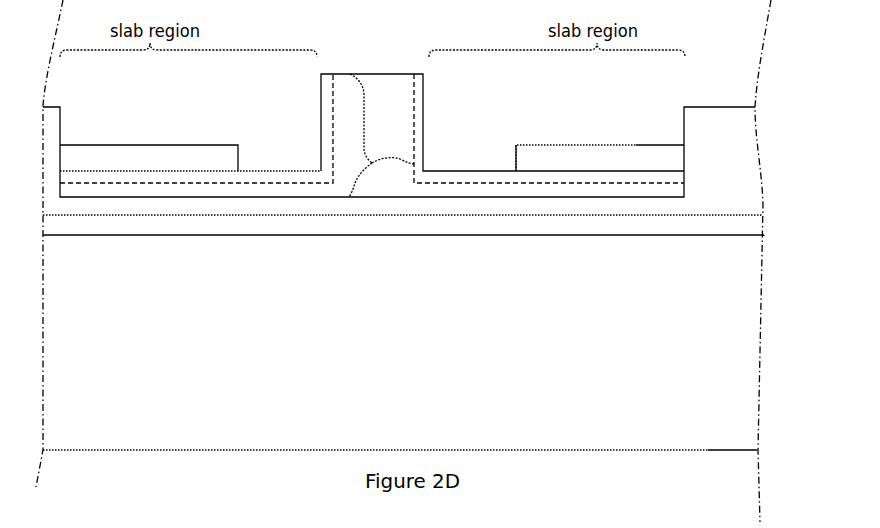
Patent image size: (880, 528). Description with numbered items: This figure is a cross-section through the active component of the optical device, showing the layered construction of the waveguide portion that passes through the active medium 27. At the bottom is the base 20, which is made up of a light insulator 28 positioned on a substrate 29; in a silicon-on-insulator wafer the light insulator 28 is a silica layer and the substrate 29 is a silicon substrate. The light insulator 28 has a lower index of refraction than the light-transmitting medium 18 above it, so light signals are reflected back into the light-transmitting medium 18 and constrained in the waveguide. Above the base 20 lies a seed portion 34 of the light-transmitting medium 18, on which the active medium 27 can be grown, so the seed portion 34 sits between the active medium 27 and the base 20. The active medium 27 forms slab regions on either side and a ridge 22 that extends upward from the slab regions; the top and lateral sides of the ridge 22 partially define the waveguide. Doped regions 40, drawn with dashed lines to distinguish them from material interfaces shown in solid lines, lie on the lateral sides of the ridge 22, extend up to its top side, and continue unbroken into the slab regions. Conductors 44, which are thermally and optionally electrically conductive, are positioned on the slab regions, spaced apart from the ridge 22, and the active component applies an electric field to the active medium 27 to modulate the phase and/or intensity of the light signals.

The light-transmitting medium 18 is at (718, 190).
The base 20 is at (774, 449).
The ridge 22 is at (425, 57).
The active medium 27 is at (415, 164).
The light insulator 28 is at (722, 225).
The substrate 29 is at (157, 430).
The seed portion 34 is at (685, 243).
The doped regions 40 is at (321, 124).
The conductors 44 is at (178, 158).